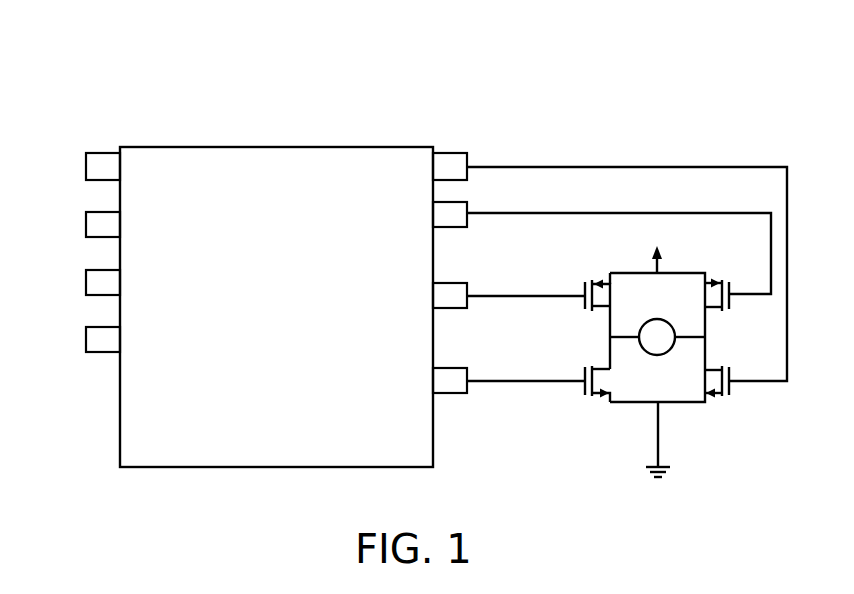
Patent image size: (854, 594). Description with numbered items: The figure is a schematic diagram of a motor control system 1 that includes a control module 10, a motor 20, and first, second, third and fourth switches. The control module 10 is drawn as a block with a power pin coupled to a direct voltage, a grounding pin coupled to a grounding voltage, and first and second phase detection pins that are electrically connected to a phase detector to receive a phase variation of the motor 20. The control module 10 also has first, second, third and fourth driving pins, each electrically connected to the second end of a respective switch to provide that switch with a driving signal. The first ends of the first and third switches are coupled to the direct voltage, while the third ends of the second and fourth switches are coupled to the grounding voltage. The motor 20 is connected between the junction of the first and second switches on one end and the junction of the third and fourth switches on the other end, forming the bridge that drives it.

The motor control system 1 is at (607, 68).
The control module 10 is at (275, 146).
The motor 20 is at (638, 324).